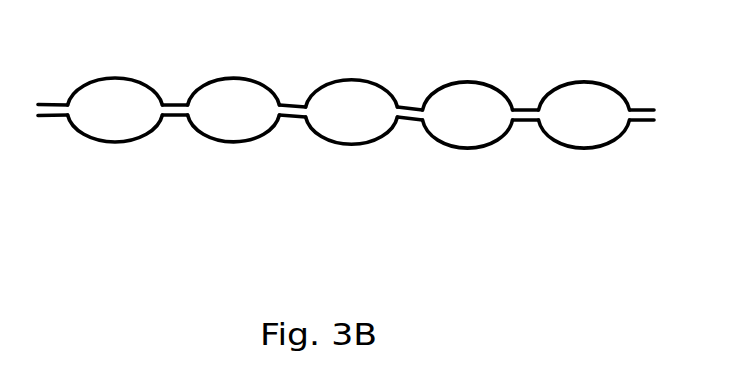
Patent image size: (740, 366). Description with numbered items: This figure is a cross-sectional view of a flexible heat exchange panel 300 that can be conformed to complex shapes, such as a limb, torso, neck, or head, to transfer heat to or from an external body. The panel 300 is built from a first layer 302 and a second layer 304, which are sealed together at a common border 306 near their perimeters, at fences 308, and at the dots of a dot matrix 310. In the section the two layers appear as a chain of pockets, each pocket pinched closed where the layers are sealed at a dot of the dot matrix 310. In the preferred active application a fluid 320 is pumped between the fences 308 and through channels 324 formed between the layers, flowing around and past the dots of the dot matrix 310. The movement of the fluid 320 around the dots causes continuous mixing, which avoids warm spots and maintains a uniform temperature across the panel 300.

The heat exchange panel 300 is at (203, 213).
The first layer 302 is at (490, 78).
The second layer 304 is at (487, 150).
The common border 306 is at (57, 92).
The fences 308 is at (647, 97).
The dot matrix 310 is at (290, 127).
The fluid 320 is at (452, 107).
The channels 324 is at (330, 102).